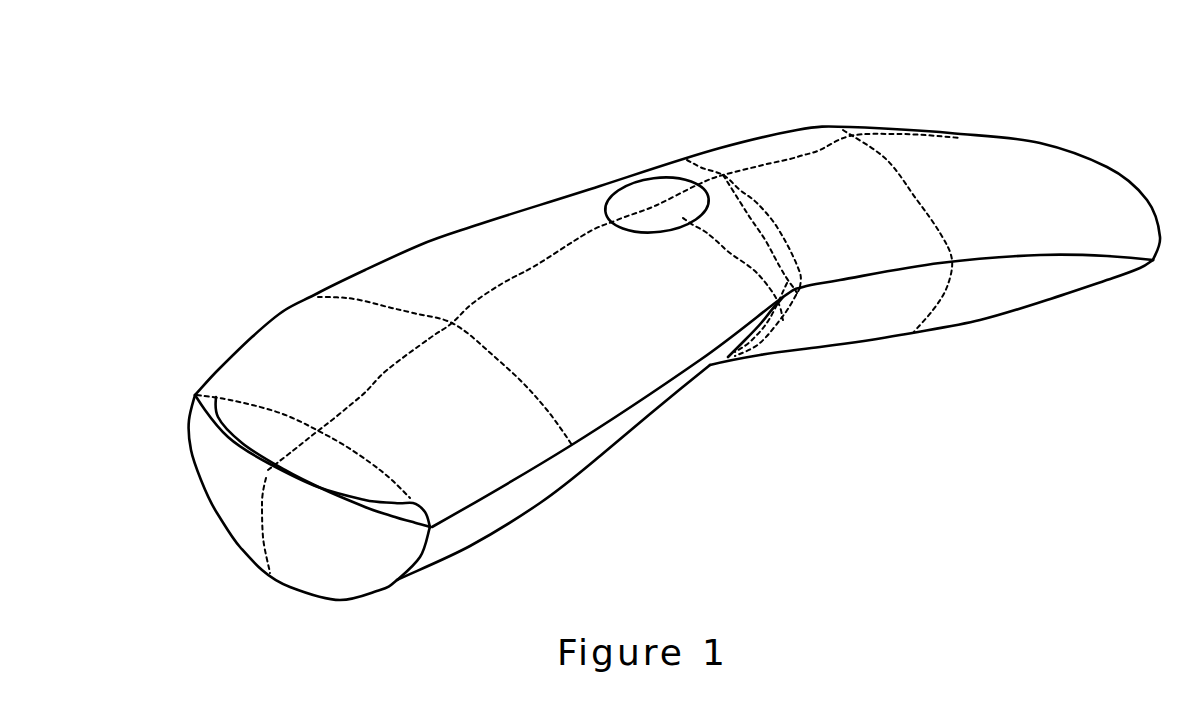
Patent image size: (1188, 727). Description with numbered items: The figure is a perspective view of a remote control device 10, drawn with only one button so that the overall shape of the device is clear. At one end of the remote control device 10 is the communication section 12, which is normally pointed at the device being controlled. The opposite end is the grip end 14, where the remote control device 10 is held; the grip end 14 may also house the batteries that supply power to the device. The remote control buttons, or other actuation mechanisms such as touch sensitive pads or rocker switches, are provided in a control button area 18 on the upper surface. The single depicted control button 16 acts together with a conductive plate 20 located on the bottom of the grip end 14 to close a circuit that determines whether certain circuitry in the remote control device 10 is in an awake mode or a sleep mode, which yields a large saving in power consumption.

The remote control device 10 is at (552, 132).
The communication section 12 is at (360, 570).
The grip end 14 is at (795, 130).
The control button 16 is at (625, 198).
The control button area 18 is at (382, 330).
The conductive plate 20 is at (1002, 302).